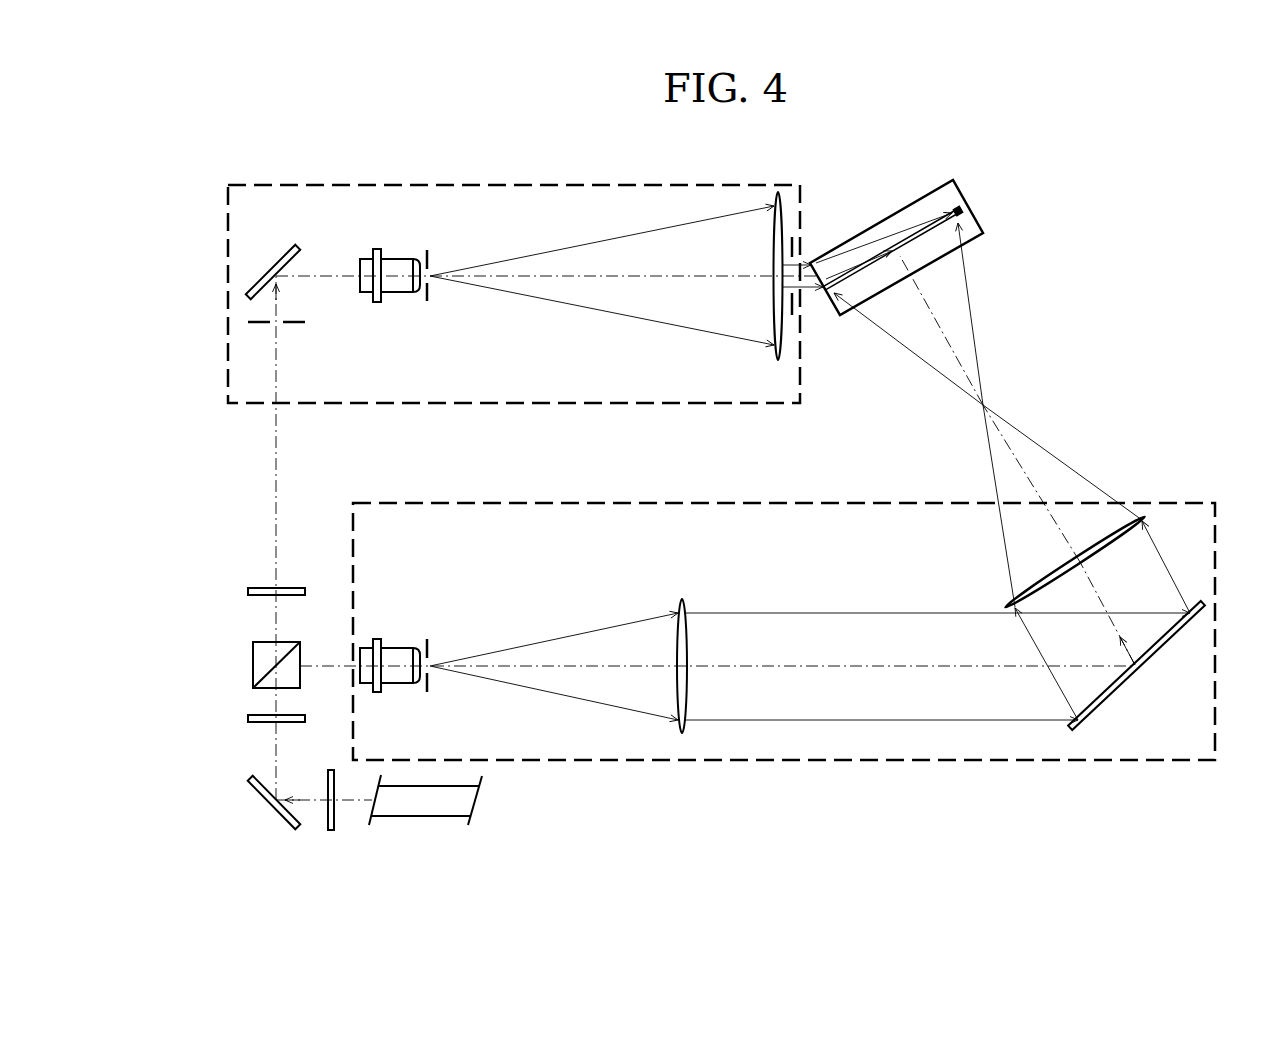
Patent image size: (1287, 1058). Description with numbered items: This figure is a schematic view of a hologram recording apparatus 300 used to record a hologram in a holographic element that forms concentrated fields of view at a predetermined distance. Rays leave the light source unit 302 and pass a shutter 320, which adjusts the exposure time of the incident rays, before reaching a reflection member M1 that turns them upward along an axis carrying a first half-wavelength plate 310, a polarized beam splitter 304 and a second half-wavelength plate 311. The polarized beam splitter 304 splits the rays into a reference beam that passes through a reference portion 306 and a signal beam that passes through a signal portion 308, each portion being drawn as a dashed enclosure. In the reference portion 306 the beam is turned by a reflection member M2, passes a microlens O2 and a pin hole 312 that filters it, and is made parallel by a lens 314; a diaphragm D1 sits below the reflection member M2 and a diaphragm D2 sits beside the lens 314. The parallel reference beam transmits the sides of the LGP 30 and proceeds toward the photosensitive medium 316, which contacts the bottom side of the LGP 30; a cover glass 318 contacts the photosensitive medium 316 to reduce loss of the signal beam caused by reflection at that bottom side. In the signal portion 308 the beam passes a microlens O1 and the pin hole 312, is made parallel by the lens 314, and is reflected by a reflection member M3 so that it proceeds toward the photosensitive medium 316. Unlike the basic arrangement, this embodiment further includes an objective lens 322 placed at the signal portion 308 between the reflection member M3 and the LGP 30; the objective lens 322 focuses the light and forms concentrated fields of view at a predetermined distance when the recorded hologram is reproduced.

The hologram recording apparatus 300 is at (1186, 216).
The LGP 30 is at (957, 193).
The light source unit 302 is at (420, 816).
The polarized beam splitter 304 is at (253, 665).
The reference portion 306 is at (525, 405).
The signal portion 308 is at (797, 762).
The first half-wavelength plate 310 is at (248, 718).
The second half-wavelength plate 311 is at (248, 592).
The pin hole 312 is at (431, 252).
The lens 314 is at (780, 192).
The photosensitive medium 316 is at (928, 232).
The cover glass 318 is at (970, 225).
The shutter 320 is at (331, 830).
The objective lens 322 is at (1143, 518).
The reflection member M1 is at (283, 818).
The reflection member M2 is at (281, 254).
The reflection member M3 is at (1105, 700).
The microlens O1 is at (396, 648).
The microlens O2 is at (396, 258).
The diaphragm D1 is at (298, 323).
The diaphragm D2 is at (795, 242).